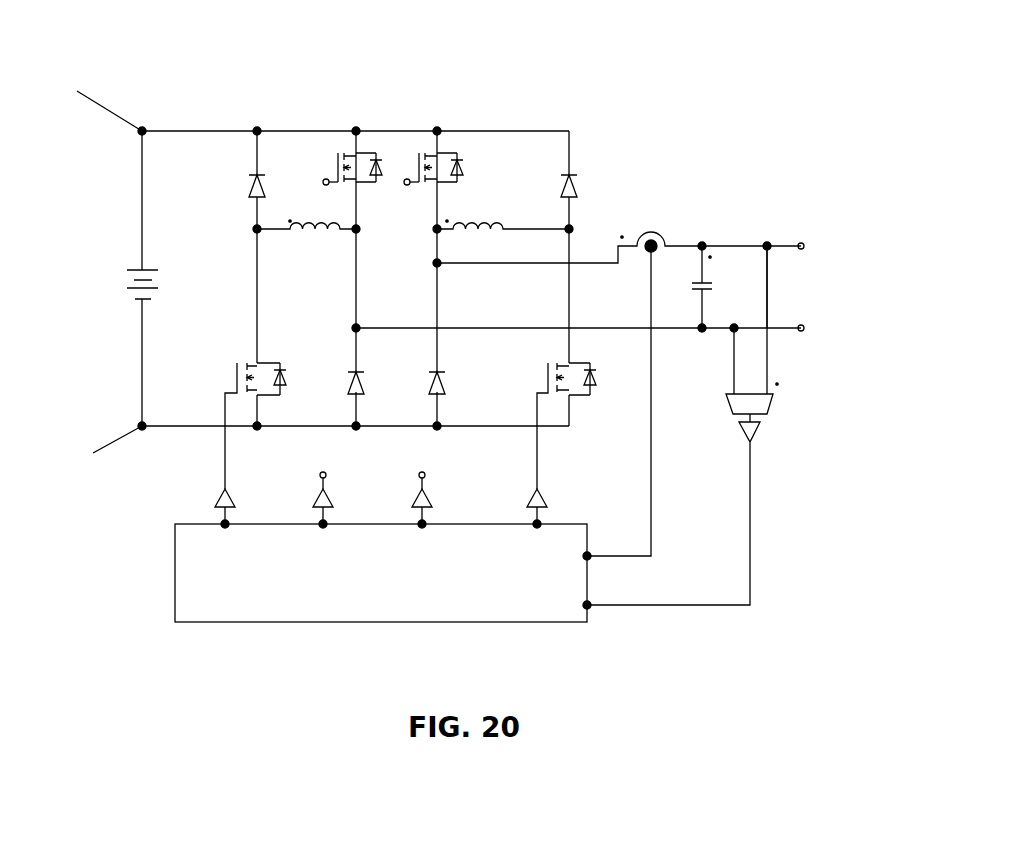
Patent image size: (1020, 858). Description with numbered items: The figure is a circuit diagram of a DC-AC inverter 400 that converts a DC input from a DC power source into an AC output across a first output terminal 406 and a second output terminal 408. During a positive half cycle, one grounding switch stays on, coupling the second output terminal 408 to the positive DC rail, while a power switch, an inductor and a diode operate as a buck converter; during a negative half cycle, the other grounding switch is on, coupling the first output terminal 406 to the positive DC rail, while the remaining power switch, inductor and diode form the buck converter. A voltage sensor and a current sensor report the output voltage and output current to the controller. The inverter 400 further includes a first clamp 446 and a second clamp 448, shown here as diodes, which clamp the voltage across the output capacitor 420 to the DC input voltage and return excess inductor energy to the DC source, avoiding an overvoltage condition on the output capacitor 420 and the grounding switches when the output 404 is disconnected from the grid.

The DC-AC inverter 400 is at (230, 73).
The output 404 is at (797, 289).
The first output terminal 406 is at (804, 244).
The second output terminal 408 is at (804, 330).
The output capacitor 420 is at (707, 280).
The first clamp 446 is at (340, 388).
The second clamp 448 is at (450, 389).